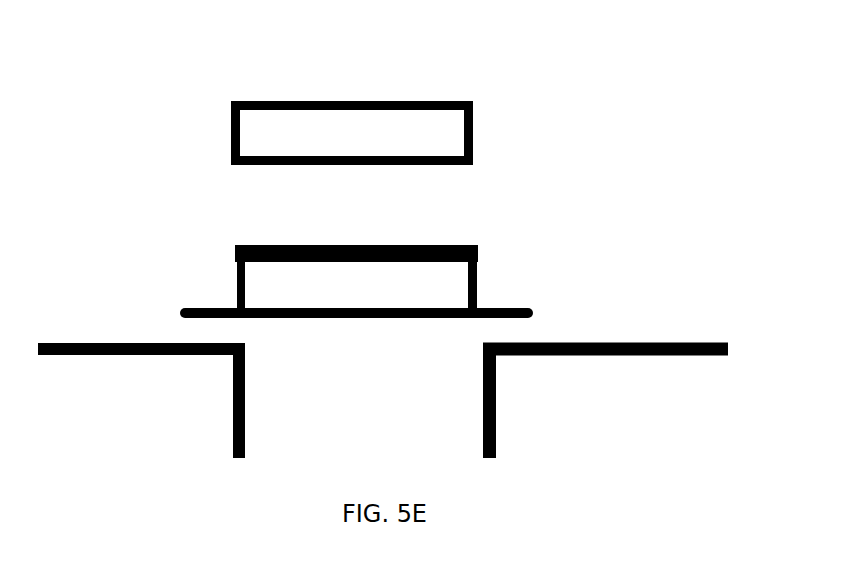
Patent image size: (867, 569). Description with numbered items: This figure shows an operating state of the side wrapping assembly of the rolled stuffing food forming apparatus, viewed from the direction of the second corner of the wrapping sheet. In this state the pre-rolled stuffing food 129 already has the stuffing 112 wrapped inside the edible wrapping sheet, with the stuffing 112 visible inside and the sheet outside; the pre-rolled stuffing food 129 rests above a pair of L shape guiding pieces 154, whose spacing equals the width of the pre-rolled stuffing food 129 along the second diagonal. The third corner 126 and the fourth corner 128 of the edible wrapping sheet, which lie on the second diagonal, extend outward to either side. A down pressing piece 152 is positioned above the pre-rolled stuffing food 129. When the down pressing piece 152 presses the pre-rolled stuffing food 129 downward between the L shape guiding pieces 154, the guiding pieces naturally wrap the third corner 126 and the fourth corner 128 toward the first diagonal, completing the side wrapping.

The down pressing piece 152 is at (482, 108).
The pre-rolled stuffing food 129 is at (259, 243).
The stuffing 112 is at (384, 296).
The fourth corner 128 is at (506, 302).
The third corner 126 is at (327, 217).
The L shape guiding pieces 154 is at (256, 419).